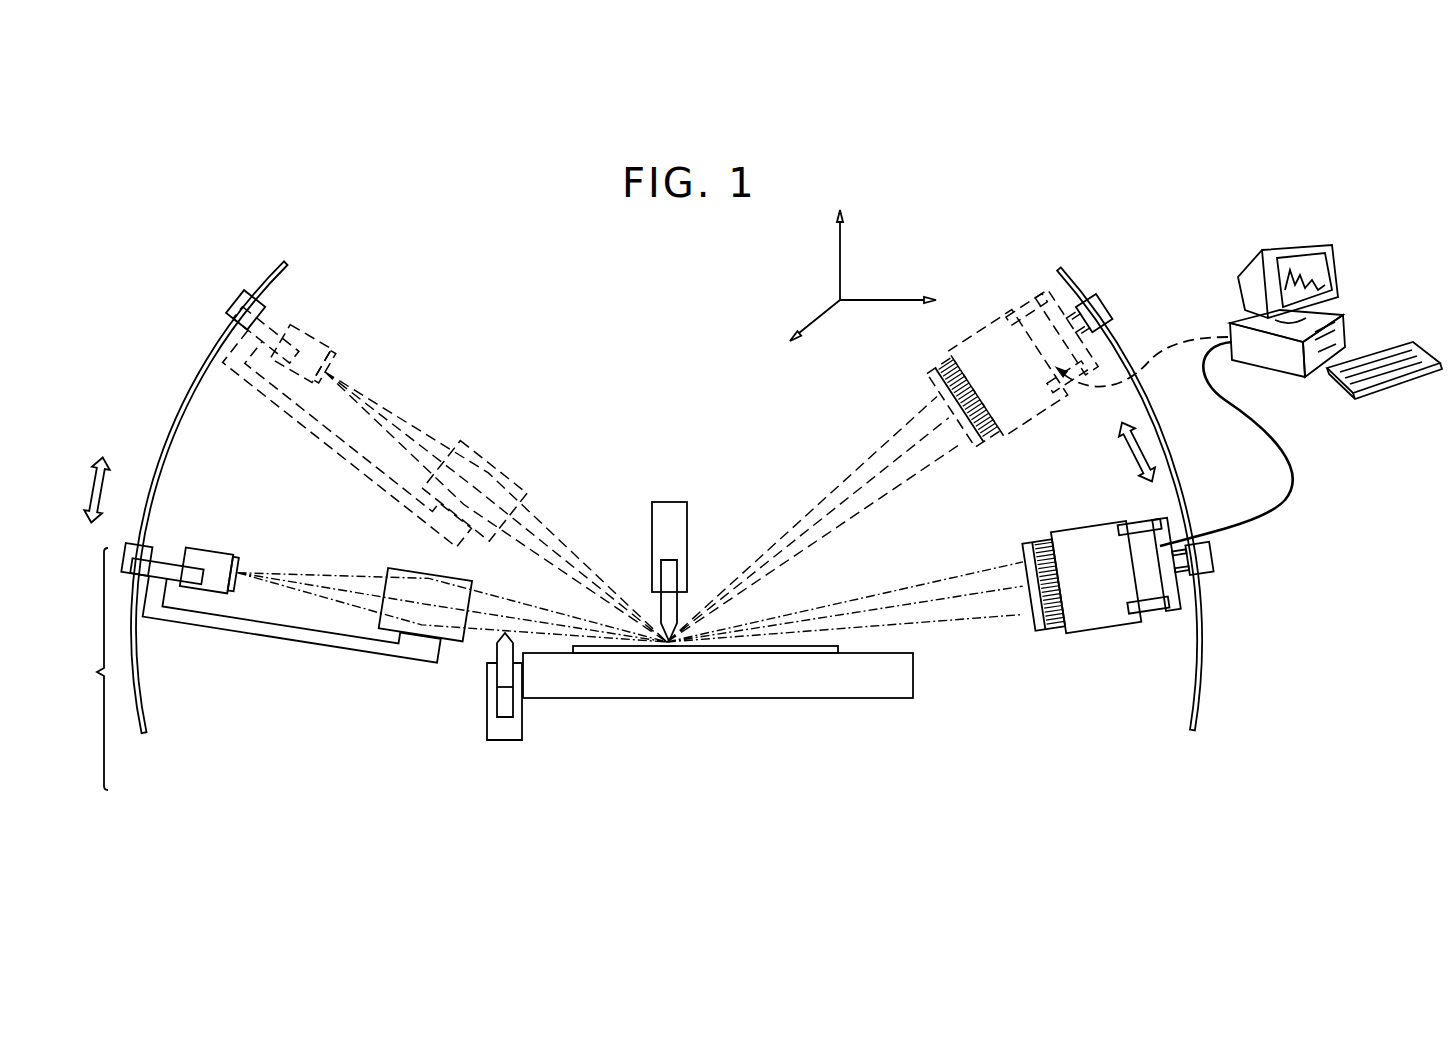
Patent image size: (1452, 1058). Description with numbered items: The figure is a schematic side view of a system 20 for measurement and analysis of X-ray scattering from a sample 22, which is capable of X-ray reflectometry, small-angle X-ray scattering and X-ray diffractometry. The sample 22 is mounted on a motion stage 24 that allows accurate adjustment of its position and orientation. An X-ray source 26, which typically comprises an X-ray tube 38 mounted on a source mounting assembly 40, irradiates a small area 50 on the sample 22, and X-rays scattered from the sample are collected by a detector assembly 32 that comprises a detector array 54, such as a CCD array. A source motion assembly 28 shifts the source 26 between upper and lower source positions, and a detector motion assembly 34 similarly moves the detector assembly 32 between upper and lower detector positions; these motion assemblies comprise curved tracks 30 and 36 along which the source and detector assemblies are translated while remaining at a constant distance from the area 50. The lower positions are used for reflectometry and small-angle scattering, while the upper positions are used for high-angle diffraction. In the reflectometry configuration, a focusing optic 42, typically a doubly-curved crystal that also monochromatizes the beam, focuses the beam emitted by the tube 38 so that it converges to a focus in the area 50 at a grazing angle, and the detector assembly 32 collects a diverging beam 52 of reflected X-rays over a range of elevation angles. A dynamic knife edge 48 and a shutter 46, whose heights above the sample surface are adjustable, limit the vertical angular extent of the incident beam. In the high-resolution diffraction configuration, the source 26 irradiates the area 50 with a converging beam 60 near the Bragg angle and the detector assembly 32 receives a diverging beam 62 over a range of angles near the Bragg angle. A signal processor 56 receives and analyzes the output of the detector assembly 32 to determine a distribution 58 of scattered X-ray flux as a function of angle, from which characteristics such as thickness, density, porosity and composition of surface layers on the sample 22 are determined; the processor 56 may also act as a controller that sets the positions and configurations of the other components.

The system 20 is at (243, 163).
The sample 22 is at (808, 653).
The motion stage 24 is at (917, 668).
The X-ray source 26 is at (89, 669).
The source motion assembly 28 is at (158, 323).
The curved track 30 is at (283, 262).
The detector assembly 32 is at (1105, 615).
The detector motion assembly 34 is at (1254, 568).
The curved track 36 is at (1182, 467).
The X-ray tube 38 is at (213, 546).
The source mounting assembly 40 is at (253, 628).
The focusing optic 42 is at (425, 572).
The shutter 46 is at (500, 640).
The dynamic knife edge 48 is at (670, 612).
The area 50 is at (665, 648).
The diverging beam 52 is at (960, 575).
The detector array 54 is at (1058, 568).
The signal processor 56 is at (1240, 318).
The distribution 58 is at (1302, 267).
The converging beam 60 is at (580, 560).
The diverging beam 62 is at (865, 447).